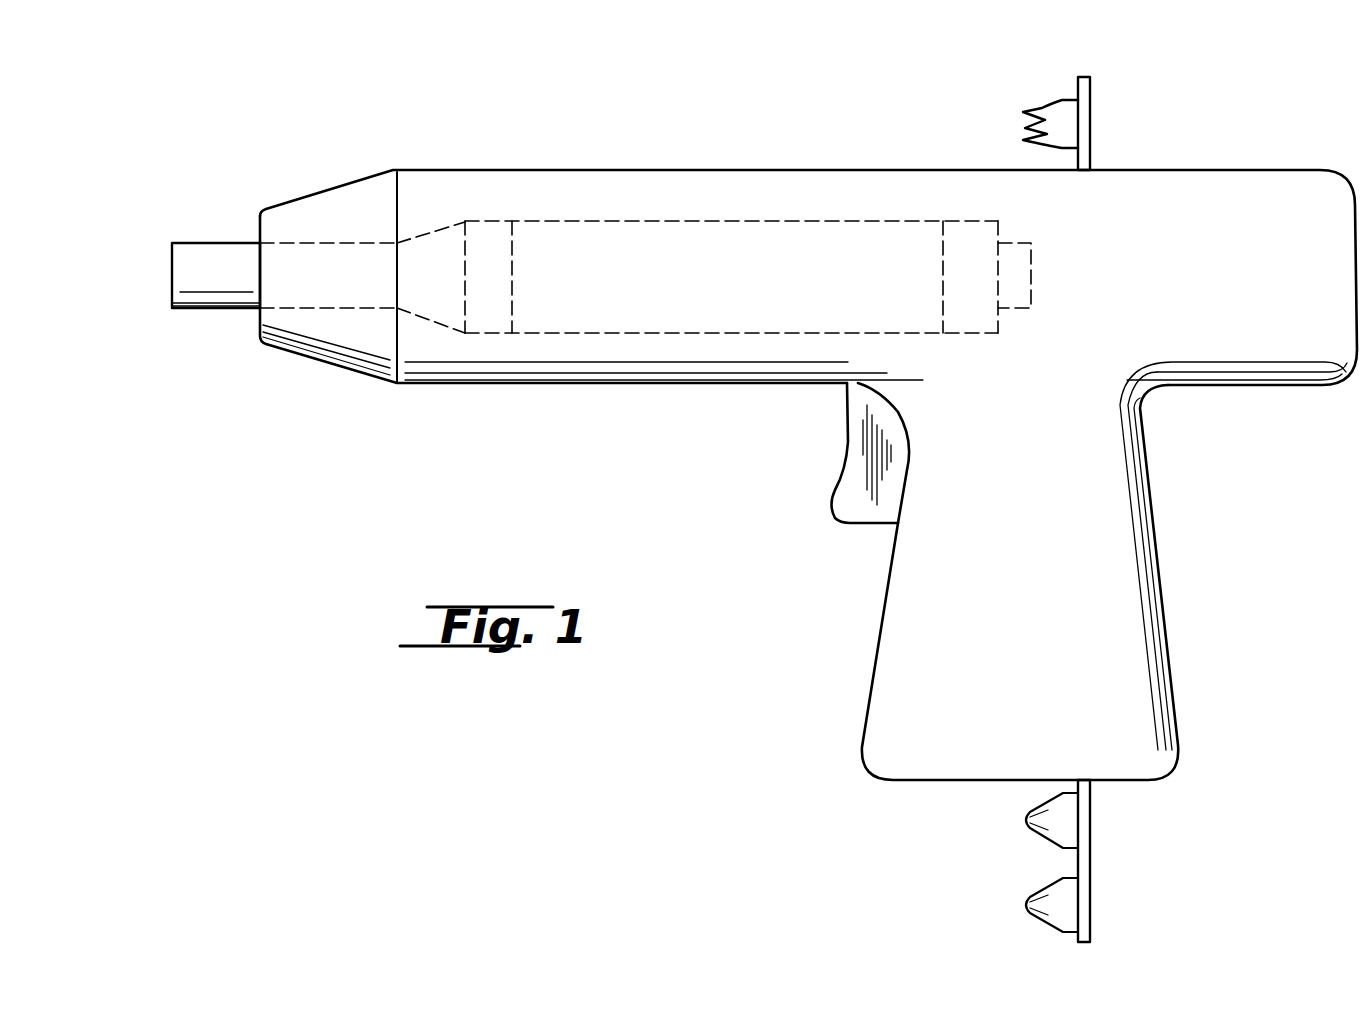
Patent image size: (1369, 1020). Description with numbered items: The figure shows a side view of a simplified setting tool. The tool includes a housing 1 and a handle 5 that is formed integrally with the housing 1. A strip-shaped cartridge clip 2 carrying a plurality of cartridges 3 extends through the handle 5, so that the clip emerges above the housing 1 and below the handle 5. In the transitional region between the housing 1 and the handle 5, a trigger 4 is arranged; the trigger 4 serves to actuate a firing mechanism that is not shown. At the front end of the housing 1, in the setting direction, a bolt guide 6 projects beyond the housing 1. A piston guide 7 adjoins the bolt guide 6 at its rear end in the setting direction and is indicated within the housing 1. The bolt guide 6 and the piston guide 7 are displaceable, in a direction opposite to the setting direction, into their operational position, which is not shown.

The housing 1 is at (413, 352).
The strip-shaped cartridge clip 2 is at (1083, 118).
The cartridges 3 is at (1022, 820).
The trigger 4 is at (856, 512).
The handle 5 is at (1135, 668).
The bolt guide 6 is at (188, 272).
The piston guide 7 is at (523, 232).